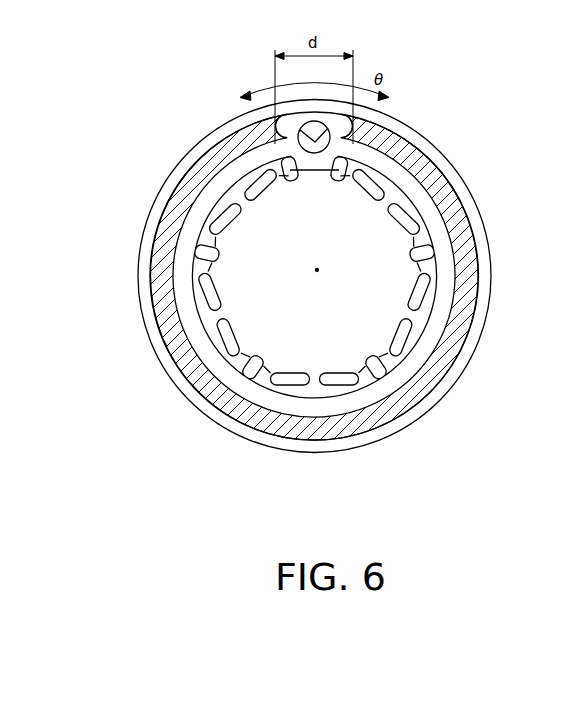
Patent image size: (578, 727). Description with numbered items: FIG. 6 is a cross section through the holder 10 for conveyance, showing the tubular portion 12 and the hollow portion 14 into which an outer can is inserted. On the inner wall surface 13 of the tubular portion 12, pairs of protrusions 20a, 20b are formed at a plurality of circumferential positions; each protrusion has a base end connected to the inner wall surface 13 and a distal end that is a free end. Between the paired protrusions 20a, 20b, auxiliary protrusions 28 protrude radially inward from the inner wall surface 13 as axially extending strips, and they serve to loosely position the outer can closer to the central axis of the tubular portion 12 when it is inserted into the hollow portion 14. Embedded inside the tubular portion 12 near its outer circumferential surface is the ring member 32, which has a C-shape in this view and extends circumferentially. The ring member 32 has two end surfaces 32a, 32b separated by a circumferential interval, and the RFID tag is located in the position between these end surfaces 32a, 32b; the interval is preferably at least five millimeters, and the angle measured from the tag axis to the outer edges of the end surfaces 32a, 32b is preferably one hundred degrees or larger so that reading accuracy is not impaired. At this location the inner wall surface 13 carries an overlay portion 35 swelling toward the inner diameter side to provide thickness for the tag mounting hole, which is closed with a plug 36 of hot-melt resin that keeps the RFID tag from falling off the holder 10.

The holder for conveyance 10 is at (442, 78).
The tubular portion 12 is at (159, 193).
The inner wall surface 13 is at (432, 318).
The hollow portion 14 is at (361, 313).
The protrusion 20a is at (344, 371).
The protrusion 20b is at (290, 371).
The auxiliary protrusion 28 is at (255, 358).
The ring member 32 is at (454, 159).
The end surface 32a is at (275, 126).
The end surface 32b is at (353, 126).
The overlay portion 35 is at (325, 153).
The plug 36 is at (306, 153).